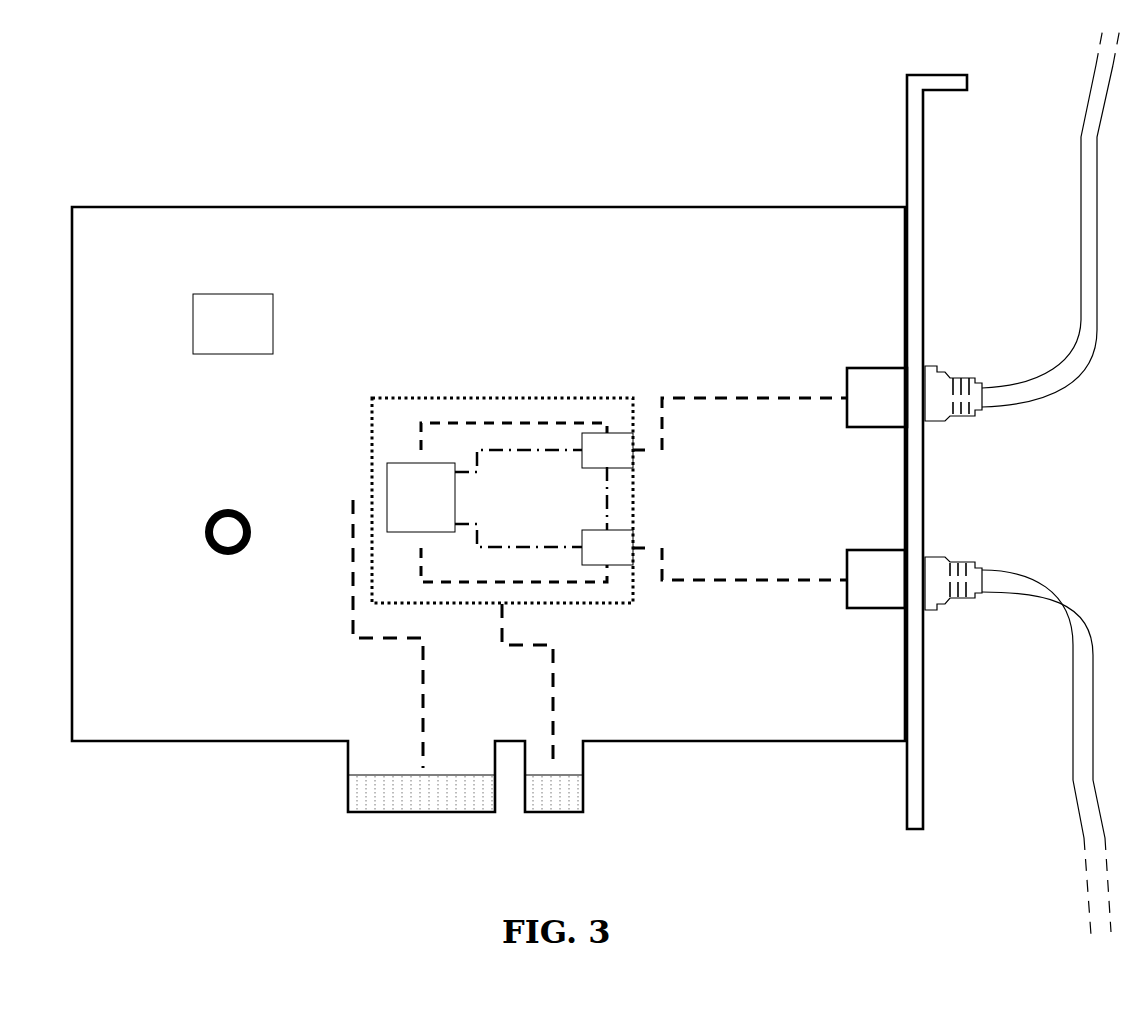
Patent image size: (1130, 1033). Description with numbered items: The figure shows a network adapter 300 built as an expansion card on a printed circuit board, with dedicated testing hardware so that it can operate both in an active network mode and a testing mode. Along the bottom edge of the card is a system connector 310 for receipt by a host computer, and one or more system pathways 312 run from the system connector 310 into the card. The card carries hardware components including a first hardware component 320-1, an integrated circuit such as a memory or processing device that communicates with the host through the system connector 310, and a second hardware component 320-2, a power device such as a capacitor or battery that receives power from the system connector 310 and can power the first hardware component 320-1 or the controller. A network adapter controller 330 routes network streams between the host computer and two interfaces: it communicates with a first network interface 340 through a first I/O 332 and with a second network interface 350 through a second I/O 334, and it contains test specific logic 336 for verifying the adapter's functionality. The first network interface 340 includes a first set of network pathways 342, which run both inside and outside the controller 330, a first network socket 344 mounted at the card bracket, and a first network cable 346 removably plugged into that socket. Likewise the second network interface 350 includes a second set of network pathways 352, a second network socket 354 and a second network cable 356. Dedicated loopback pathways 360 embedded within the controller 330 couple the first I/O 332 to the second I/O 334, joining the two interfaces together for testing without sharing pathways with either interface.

The network adapter 300 is at (453, 198).
The system connector 310 is at (336, 801).
The system pathways 312 is at (550, 725).
The first hardware component 320-1 is at (233, 324).
The second hardware component 320-2 is at (222, 554).
The network adapter controller 330 is at (487, 396).
The first input/output (I/O) 332 is at (607, 450).
The second input/output (I/O) 334 is at (607, 547).
The test specific logic 336 is at (421, 497).
The first network interface 340 is at (943, 227).
The first set of network pathways 342 is at (579, 416).
The first network socket 344 is at (877, 397).
The first network cable 346 is at (1078, 330).
The second network interface 350 is at (942, 742).
The second set of network pathways 352 is at (577, 587).
The second network socket 354 is at (876, 579).
The second network cable 356 is at (1072, 645).
The dedicated loopback pathways 360 is at (601, 497).